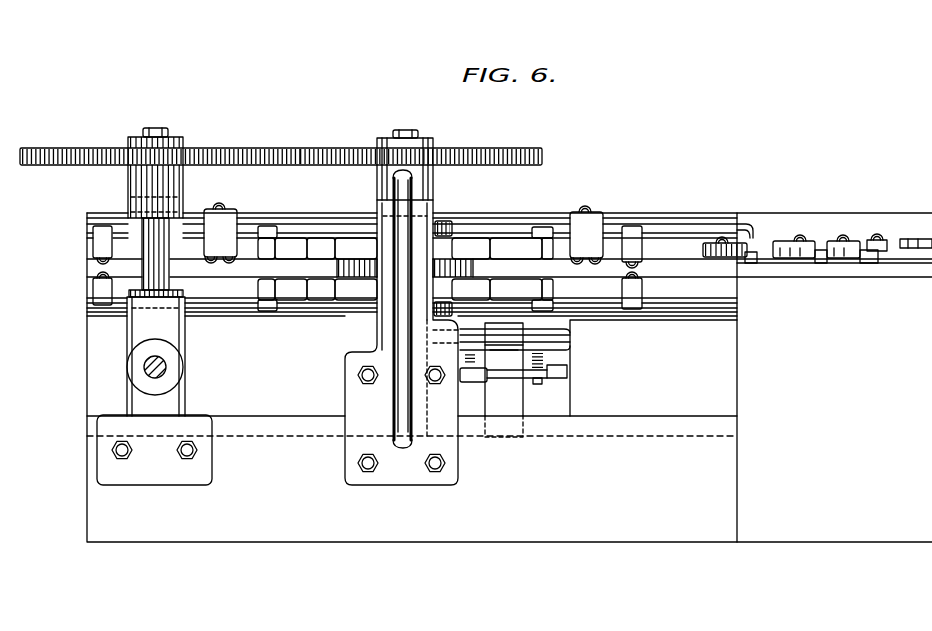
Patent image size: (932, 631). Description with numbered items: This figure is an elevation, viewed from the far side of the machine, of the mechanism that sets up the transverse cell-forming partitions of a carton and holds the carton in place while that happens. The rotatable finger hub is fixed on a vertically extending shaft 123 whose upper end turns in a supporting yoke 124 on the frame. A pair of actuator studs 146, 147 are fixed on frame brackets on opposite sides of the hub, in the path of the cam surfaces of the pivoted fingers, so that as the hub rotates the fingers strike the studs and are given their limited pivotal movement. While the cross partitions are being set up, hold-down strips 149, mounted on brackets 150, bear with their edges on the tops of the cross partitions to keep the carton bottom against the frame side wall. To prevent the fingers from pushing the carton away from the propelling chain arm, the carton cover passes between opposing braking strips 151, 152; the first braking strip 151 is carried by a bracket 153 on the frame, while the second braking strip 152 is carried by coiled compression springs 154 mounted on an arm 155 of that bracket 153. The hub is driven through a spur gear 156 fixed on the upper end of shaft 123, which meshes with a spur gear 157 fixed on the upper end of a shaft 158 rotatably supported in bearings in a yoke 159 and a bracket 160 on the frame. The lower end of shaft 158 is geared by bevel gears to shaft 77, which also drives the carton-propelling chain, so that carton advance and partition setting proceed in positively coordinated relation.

The shaft 77 is at (150, 367).
The vertically extending shaft 123 is at (400, 130).
The supporting yoke 124 is at (376, 196).
The actuator stud 146 is at (450, 222).
The actuator stud 147 is at (440, 311).
The hold-down strips 149 is at (90, 223).
The brackets 150 is at (100, 244).
The braking strip 151 is at (571, 334).
The braking strip 152 is at (571, 353).
The bracket 153 is at (505, 406).
The coiled compression springs 154 is at (542, 379).
The arm 155 is at (571, 373).
The spur gear 156 is at (470, 148).
The spur gear 157 is at (223, 148).
The shaft 158 is at (163, 130).
The yoke 159 is at (136, 194).
The bracket 160 is at (184, 297).